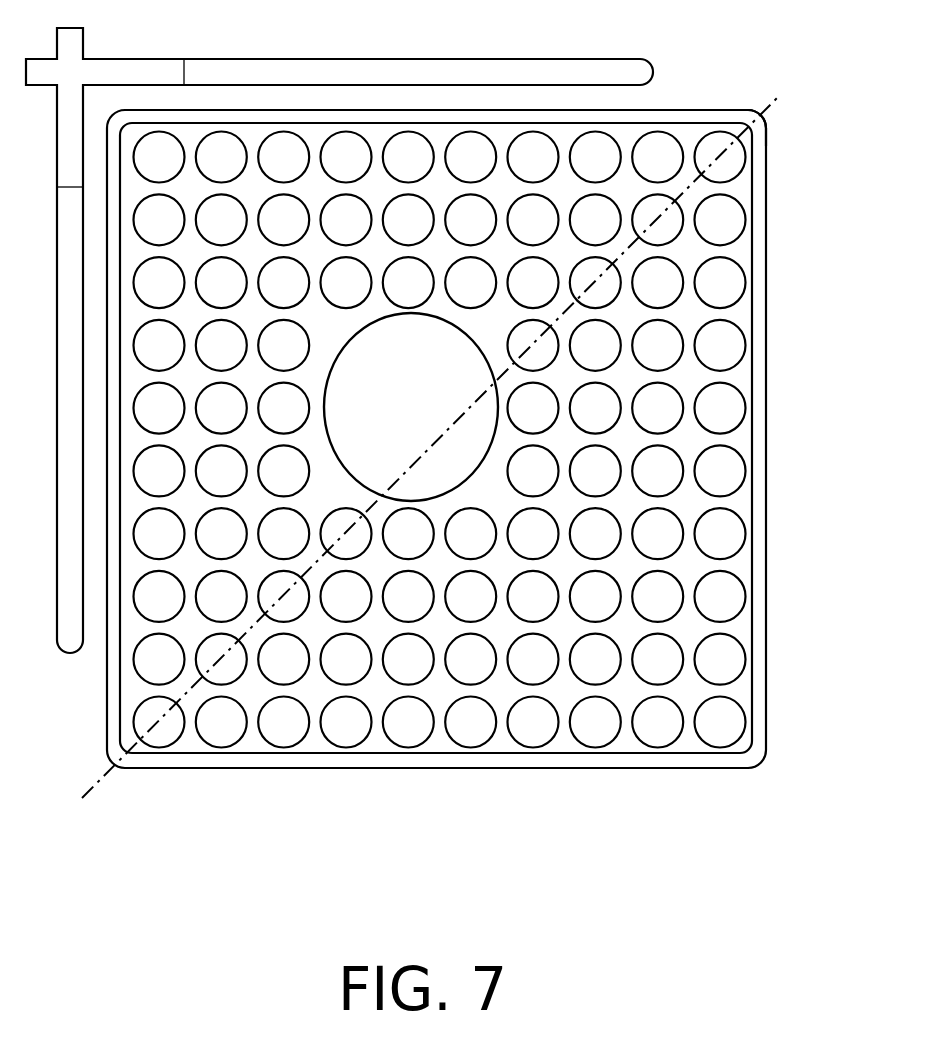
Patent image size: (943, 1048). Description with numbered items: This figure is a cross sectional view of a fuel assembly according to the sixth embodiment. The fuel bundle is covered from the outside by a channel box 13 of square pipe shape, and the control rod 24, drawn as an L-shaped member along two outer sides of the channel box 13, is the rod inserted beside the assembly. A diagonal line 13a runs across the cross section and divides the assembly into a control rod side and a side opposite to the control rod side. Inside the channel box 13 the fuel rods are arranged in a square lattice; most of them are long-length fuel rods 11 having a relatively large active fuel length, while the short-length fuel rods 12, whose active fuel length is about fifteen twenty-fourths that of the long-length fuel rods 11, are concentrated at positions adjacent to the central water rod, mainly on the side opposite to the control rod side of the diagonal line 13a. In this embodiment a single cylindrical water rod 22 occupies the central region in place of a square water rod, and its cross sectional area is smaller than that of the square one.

The long-length fuel rod 11 is at (476, 438).
The short-length fuel rod 12 is at (440, 440).
The channel box 13 is at (474, 439).
The diagonal line 13a is at (798, 128).
The cylindrical water rod 22 is at (577, 407).
The control rod 24 is at (372, 337).